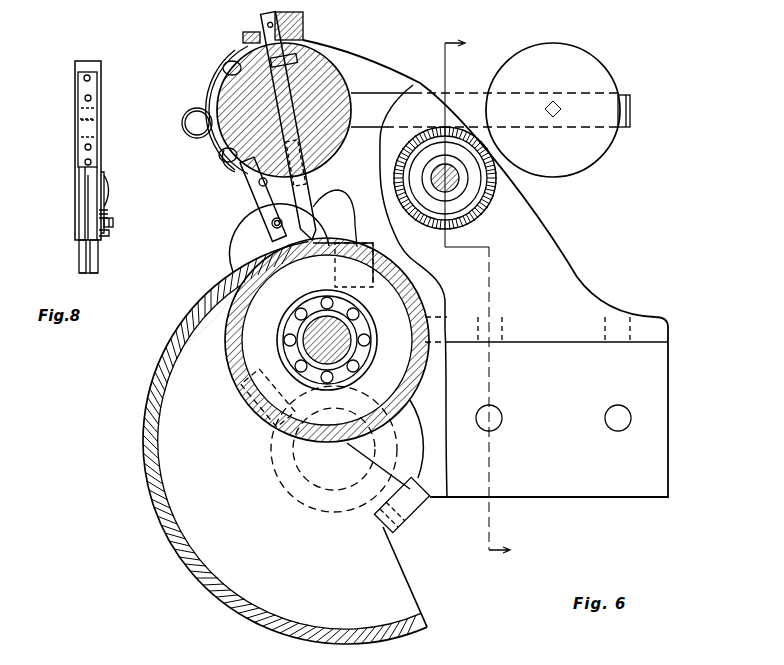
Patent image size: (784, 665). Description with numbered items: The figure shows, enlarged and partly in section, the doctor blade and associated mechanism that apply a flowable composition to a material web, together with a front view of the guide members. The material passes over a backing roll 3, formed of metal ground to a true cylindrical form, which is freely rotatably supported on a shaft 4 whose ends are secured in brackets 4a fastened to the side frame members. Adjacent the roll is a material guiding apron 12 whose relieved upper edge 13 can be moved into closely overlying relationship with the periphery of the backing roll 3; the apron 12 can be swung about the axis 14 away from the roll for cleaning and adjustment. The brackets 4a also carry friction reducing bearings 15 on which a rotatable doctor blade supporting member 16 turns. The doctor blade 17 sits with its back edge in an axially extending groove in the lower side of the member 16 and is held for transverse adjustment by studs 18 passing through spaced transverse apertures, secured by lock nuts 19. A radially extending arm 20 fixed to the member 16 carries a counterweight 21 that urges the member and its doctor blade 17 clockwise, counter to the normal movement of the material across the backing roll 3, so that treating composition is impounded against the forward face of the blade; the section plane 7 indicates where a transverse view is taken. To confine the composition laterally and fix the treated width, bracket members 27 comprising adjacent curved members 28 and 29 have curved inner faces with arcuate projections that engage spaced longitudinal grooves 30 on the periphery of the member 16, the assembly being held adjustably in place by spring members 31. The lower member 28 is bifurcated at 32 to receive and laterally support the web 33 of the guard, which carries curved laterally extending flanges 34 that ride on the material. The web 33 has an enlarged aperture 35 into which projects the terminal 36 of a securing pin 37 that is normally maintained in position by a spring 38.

In FIG. 6, the backing roll 3 is at (232, 366).
In FIG. 6, the shaft 4 is at (303, 332).
In FIG. 6, the brackets 4a is at (577, 280).
In FIG. 6, the section line 7 is at (484, 297).
In FIG. 6, the material guiding apron 12 is at (157, 513).
In FIG. 6, the upper edge 13 is at (222, 284).
In FIG. 6, the axis 14 is at (347, 443).
In FIG. 6, the friction reducing bearings 15 is at (312, 60).
In FIG. 6, the rotatable doctor blade supporting member 16 is at (262, 60).
In FIG. 6, the doctor blade 17 is at (303, 193).
In FIG. 6, the studs 18 is at (260, 20).
In FIG. 6, the lock nuts 19 is at (303, 25).
In FIG. 6, the radially extending arm 20 is at (380, 100).
In FIG. 6, the counterweight 21 is at (578, 55).
In FIG. 6, the bracket members 27 is at (232, 147).
In FIG. 8, the bracket members 27 is at (82, 178).
In FIG. 6, the lower curved member 28 is at (224, 158).
In FIG. 8, the lower curved member 28 is at (98, 173).
In FIG. 6, the upper curved member 29 is at (213, 88).
In FIG. 8, the upper curved member 29 is at (101, 80).
In FIG. 6, the longitudinal grooves 30 is at (224, 64).
In FIG. 6, the spring members 31 is at (186, 112).
In FIG. 8, the spring members 31 is at (80, 122).
In FIG. 8, the bifurcation 32 is at (85, 192).
In FIG. 6, the web 33 is at (230, 241).
In FIG. 6, the laterally extending flanges 34 is at (242, 258).
In FIG. 8, the laterally extending flanges 34 is at (80, 263).
In FIG. 6, the enlarged aperture 35 is at (270, 220).
In FIG. 8, the terminal 36 is at (101, 236).
In FIG. 8, the securing pin 37 is at (113, 222).
In FIG. 8, the spring 38 is at (103, 213).